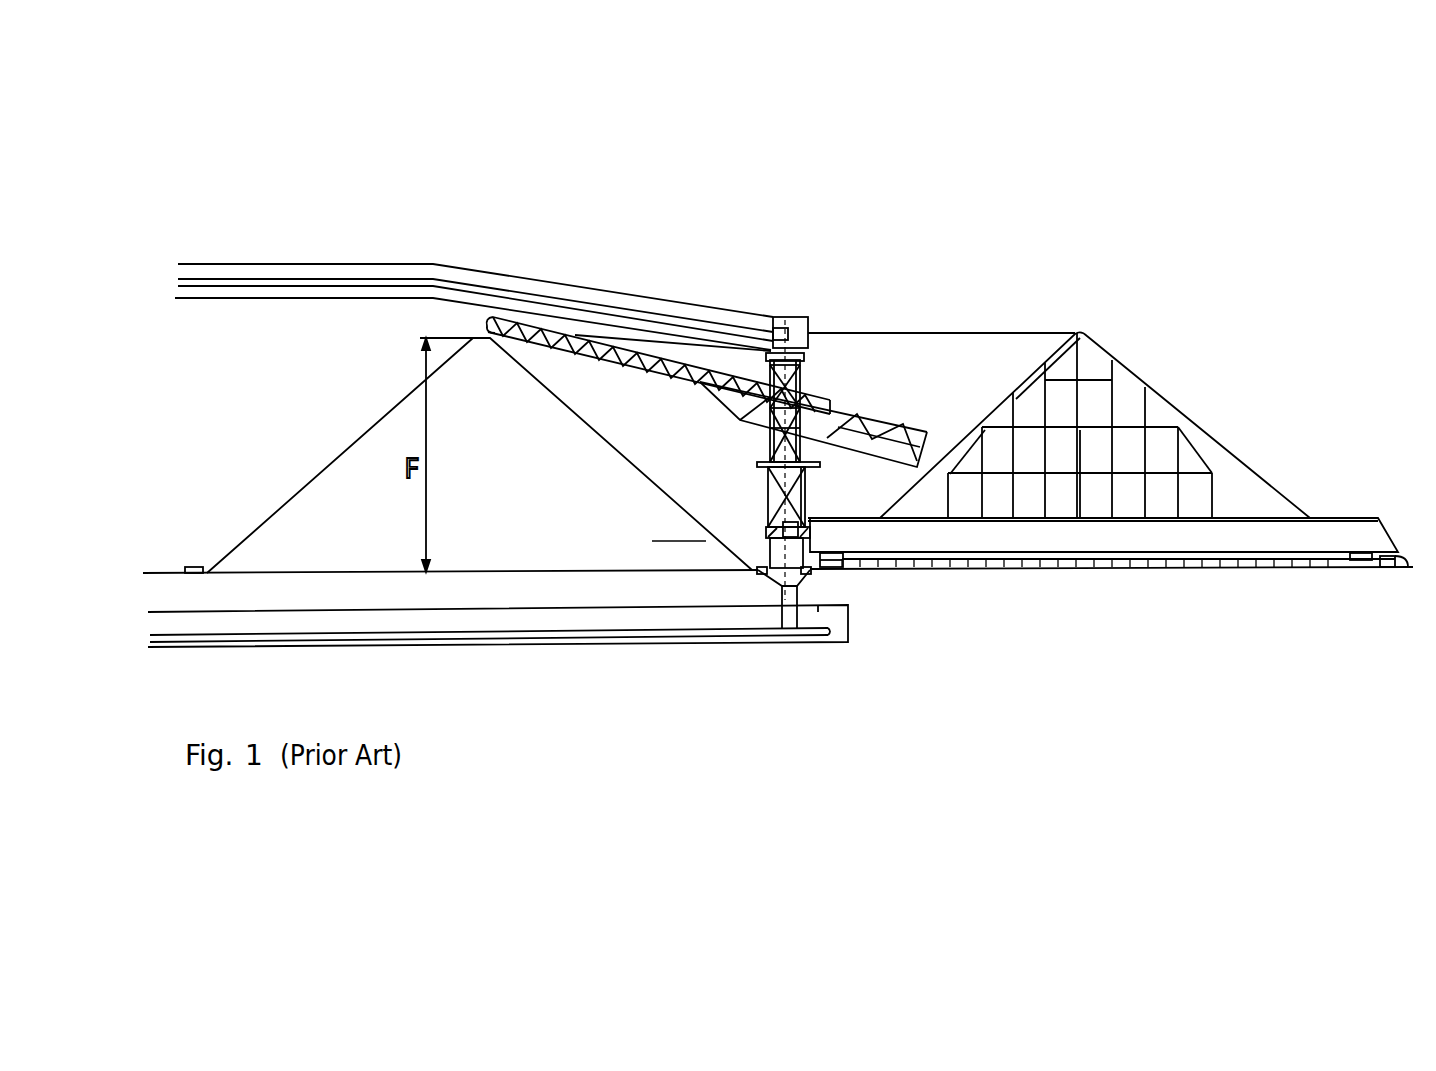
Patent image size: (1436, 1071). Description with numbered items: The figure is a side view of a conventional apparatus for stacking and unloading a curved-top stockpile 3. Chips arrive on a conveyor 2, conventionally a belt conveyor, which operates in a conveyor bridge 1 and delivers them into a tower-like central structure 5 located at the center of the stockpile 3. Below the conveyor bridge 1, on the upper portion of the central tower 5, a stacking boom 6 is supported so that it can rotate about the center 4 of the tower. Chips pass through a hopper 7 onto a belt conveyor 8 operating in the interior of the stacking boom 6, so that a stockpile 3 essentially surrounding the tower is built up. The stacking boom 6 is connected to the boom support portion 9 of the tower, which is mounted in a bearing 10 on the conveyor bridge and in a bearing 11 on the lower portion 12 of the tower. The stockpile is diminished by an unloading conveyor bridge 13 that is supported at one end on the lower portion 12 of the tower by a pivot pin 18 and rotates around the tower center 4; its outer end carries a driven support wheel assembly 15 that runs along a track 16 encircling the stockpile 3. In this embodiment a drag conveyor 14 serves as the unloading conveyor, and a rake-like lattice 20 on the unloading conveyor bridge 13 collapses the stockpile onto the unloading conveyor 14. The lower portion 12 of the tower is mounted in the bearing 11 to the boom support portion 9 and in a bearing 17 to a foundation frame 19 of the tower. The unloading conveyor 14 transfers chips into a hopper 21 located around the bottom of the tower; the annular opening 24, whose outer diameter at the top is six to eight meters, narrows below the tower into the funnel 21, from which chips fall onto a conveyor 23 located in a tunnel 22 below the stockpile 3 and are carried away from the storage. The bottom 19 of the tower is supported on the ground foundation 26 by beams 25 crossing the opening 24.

The conveyor bridge 1 is at (488, 277).
The conveyor 2 is at (549, 300).
The curved-top stockpile 3 is at (345, 468).
The center of the tower 4 is at (785, 317).
The tower-like central structure 5 is at (757, 485).
The stacking boom 6 is at (843, 404).
The hopper 7 is at (801, 383).
The belt conveyor 8 is at (589, 357).
The boom support portion 9 is at (770, 438).
The bearing 10 is at (766, 359).
The bearing 11 is at (757, 465).
The lower portion of the tower 12 is at (808, 503).
The unloading conveyor bridge 13 is at (1298, 533).
The drag conveyor 14 is at (903, 570).
The driven support wheel assembly 15 is at (1400, 568).
The track 16 is at (208, 565).
The bearing 17 is at (766, 558).
The pivot pin 18 is at (766, 530).
The foundation frame 19 is at (826, 570).
The rake-like lattice 20 is at (1113, 390).
The hopper 21 is at (793, 592).
The tunnel 22 is at (650, 618).
The conveyor 23 is at (553, 633).
The opening 24 is at (758, 560).
The beams 25 is at (818, 607).
The ground foundation 26 is at (750, 597).